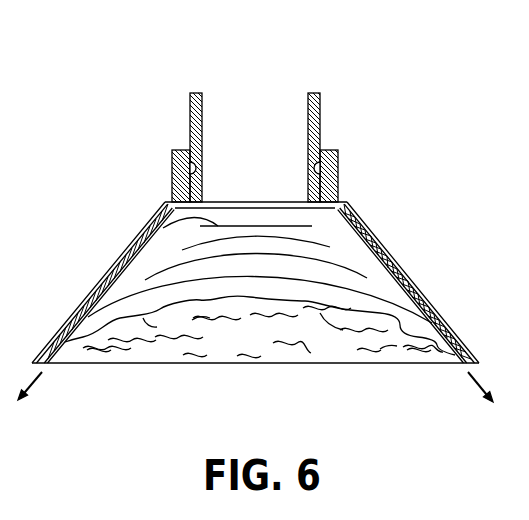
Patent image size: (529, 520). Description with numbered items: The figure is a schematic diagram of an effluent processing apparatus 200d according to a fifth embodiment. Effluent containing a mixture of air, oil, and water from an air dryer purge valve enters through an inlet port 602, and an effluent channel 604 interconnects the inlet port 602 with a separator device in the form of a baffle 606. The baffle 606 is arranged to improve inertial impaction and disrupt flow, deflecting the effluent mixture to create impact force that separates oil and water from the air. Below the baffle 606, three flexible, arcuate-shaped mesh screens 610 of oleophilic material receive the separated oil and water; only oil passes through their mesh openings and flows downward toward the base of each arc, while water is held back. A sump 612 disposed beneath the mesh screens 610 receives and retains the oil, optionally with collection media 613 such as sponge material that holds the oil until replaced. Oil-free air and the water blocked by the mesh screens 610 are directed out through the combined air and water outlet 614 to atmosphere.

The effluent processing apparatus 200d is at (400, 95).
The inlet port 602 is at (256, 102).
The effluent channel 604 is at (280, 154).
The baffle 606 is at (165, 223).
The mesh screens 610 is at (330, 247).
The sump 612 is at (272, 363).
The collection media 613 is at (395, 347).
The combined air and water outlet 614 is at (47, 365).